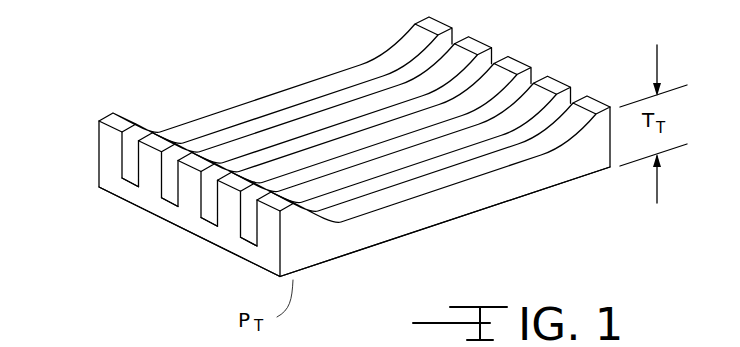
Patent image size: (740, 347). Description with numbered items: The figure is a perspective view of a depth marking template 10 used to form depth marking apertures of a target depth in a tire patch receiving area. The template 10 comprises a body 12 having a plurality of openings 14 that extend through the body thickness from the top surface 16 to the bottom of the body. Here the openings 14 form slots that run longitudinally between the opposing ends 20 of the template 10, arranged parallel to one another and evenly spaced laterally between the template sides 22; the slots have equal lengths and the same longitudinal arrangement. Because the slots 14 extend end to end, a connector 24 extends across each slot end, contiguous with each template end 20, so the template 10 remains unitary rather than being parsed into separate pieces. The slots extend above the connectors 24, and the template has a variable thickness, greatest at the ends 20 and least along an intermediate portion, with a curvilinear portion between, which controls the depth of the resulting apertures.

The depth marking template 10 is at (252, 58).
The body 12 is at (587, 176).
The openings 14 is at (210, 132).
The top surface 16 is at (331, 92).
The opposing ends 20 is at (177, 217).
The template sides 22 is at (310, 245).
The connectors 24 is at (110, 187).